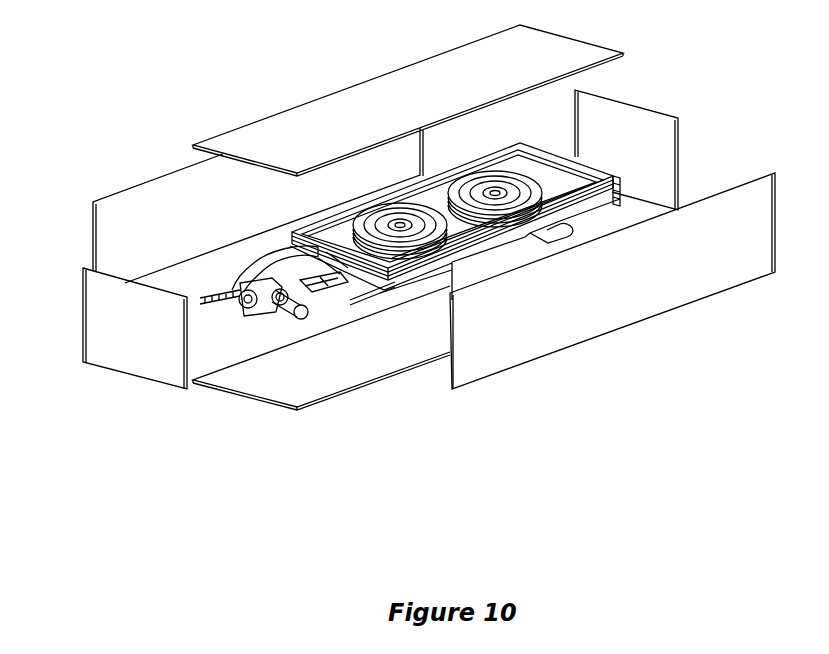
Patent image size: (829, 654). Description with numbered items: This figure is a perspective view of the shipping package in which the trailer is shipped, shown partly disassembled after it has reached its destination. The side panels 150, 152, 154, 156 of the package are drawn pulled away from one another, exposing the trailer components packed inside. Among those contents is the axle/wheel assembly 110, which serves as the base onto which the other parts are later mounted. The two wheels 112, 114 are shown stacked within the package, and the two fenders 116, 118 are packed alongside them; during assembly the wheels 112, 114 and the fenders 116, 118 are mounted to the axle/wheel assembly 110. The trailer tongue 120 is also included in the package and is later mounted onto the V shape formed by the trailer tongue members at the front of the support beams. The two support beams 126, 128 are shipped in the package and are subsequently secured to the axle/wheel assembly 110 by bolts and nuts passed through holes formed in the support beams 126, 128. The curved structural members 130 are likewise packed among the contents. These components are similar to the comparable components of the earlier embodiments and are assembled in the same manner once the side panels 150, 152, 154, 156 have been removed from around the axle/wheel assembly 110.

The axle/wheel assembly 110 is at (343, 323).
The wheel 112 is at (520, 145).
The wheel 114 is at (578, 157).
The fender 116 is at (250, 292).
The fender 118 is at (233, 296).
The trailer tongue 120 is at (319, 293).
The support beam 126 is at (403, 260).
The support beam 128 is at (141, 242).
The curved structural members 130 is at (618, 185).
The side panel 150 is at (277, 124).
The side panel 152 is at (543, 354).
The side panel 154 is at (342, 405).
The side panel 156 is at (110, 188).